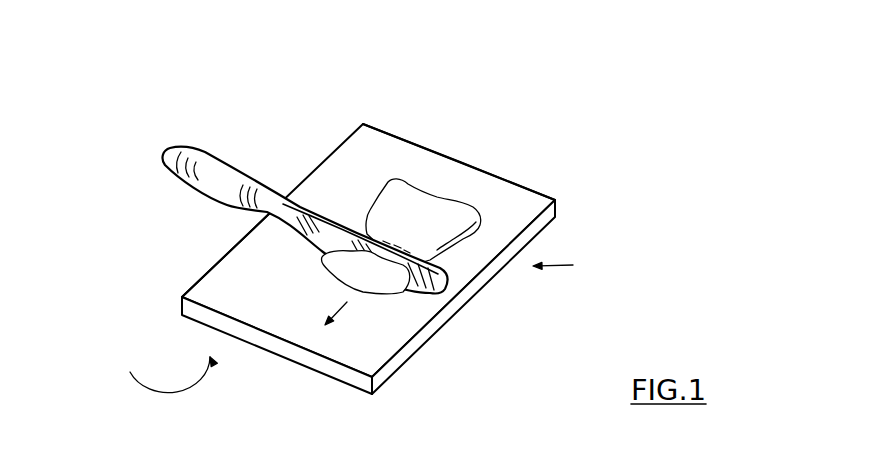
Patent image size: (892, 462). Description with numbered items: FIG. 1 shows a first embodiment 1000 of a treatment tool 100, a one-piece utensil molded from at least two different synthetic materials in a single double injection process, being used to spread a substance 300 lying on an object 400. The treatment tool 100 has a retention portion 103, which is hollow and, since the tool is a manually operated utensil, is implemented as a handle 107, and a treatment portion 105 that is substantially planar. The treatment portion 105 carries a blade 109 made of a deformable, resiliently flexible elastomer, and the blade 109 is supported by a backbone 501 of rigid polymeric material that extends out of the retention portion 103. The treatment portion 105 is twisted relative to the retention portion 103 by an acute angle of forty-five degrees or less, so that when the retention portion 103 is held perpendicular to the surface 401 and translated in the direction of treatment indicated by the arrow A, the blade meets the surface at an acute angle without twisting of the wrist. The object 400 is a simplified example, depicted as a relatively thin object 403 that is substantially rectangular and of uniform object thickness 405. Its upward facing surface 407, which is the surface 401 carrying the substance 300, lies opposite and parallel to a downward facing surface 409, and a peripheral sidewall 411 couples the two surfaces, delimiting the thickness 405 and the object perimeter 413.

The first embodiment 1000 is at (538, 67).
The treatment tool 100 is at (137, 108).
The retention portion 103 is at (271, 163).
The treatment portion 105 is at (576, 266).
The handle 107 is at (183, 147).
The blade 109 is at (440, 293).
The substance 300 is at (398, 200).
The object 400 is at (621, 190).
The surface 401 is at (380, 142).
The thin object 403 is at (448, 155).
The object thickness 405 is at (362, 388).
The upward facing surface 407 is at (225, 264).
The downward facing surface 409 is at (162, 370).
The peripheral sidewall 411 is at (300, 357).
The object perimeter 413 is at (497, 173).
The backbone 501 is at (368, 230).
The arrow indicating direction of treatment A is at (334, 303).